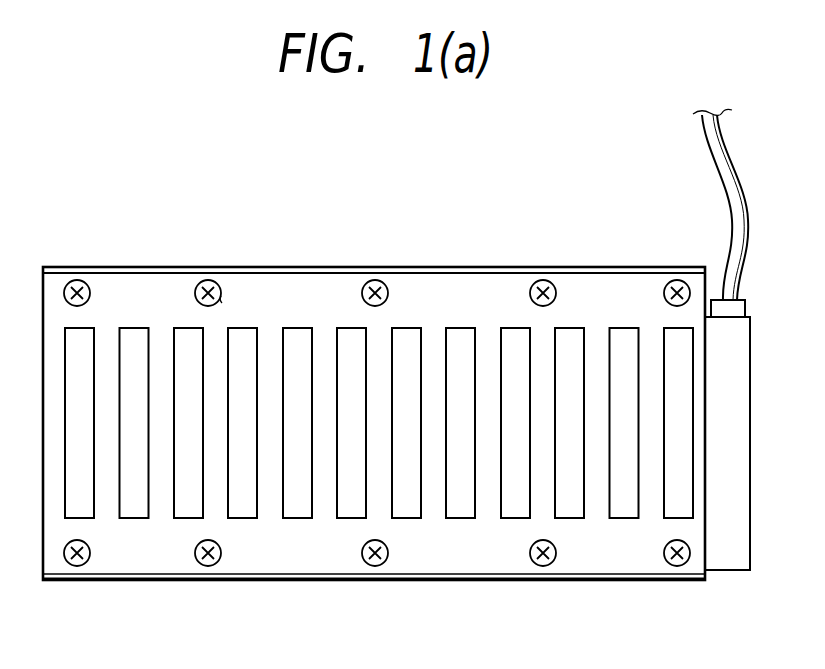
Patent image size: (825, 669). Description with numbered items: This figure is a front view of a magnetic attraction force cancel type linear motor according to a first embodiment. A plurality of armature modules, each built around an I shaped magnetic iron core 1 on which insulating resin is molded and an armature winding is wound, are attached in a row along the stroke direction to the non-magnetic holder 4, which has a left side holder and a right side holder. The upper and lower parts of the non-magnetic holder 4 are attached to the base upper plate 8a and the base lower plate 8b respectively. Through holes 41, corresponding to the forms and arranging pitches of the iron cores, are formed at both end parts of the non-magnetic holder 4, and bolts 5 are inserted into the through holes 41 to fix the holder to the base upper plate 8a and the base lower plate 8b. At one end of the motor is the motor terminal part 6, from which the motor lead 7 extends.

The I shaped magnetic iron core 1 is at (512, 337).
The non-magnetic holder 4 is at (374, 429).
The through holes 41 is at (221, 296).
The bolt 5 is at (205, 287).
The motor terminal part 6 is at (726, 557).
The motor lead 7 is at (718, 162).
The base upper plate 8a is at (448, 268).
The base lower plate 8b is at (334, 580).